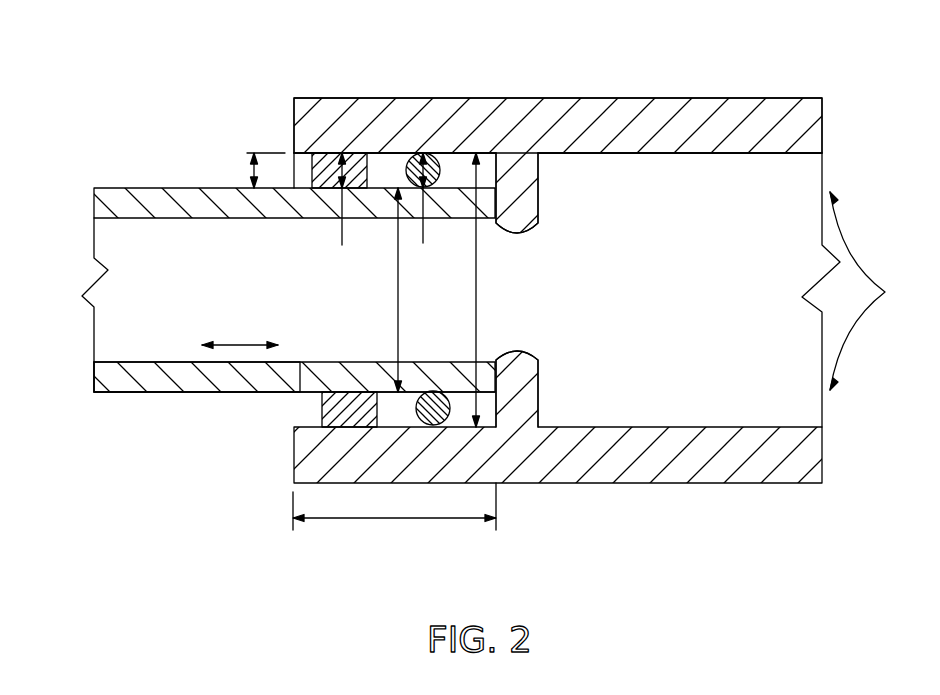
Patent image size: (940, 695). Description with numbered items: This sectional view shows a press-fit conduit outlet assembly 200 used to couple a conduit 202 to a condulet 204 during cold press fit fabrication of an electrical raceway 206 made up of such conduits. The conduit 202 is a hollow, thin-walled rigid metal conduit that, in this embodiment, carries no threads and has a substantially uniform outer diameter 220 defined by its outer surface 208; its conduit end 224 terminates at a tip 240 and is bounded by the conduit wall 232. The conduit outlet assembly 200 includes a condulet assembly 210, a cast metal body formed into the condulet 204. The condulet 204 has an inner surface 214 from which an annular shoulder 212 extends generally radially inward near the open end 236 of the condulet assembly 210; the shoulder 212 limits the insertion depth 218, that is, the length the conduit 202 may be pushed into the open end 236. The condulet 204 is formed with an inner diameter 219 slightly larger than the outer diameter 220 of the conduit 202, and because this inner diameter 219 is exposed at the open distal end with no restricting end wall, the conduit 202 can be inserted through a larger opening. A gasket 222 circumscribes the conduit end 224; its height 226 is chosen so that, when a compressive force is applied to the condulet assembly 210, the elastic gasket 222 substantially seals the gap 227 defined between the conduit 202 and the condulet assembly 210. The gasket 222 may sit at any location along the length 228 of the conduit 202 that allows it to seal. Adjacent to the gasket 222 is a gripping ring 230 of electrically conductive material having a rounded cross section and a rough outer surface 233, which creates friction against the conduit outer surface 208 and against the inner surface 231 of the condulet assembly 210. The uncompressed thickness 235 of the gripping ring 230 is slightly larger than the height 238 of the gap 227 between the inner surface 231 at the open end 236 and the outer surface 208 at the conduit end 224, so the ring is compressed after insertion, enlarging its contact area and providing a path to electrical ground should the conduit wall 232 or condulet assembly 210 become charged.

The conduit outlet assembly 200 is at (292, 60).
The conduit 202 is at (122, 182).
The condulet 204 is at (536, 82).
The electrical raceway 206 is at (160, 78).
The outer surface 208 is at (120, 393).
The condulet assembly 210 is at (882, 291).
The annular shoulder 212 is at (538, 202).
The inner surface 214 is at (770, 153).
The insertion depth 218 is at (428, 520).
The inner diameter 219 is at (476, 272).
The outer diameter 220 is at (398, 283).
The gasket 222 is at (425, 157).
The conduit end 224 is at (272, 393).
The height 226 is at (445, 258).
The gap 227 is at (298, 168).
The length 228 is at (240, 345).
The gripping ring 230 is at (312, 150).
The inner surface 231 is at (387, 424).
The conduit wall 232 is at (197, 383).
The rough outer surface 233 is at (345, 165).
The thickness 235 is at (342, 238).
The open end 236 is at (488, 108).
The height 238 is at (248, 170).
The tip 240 is at (530, 357).